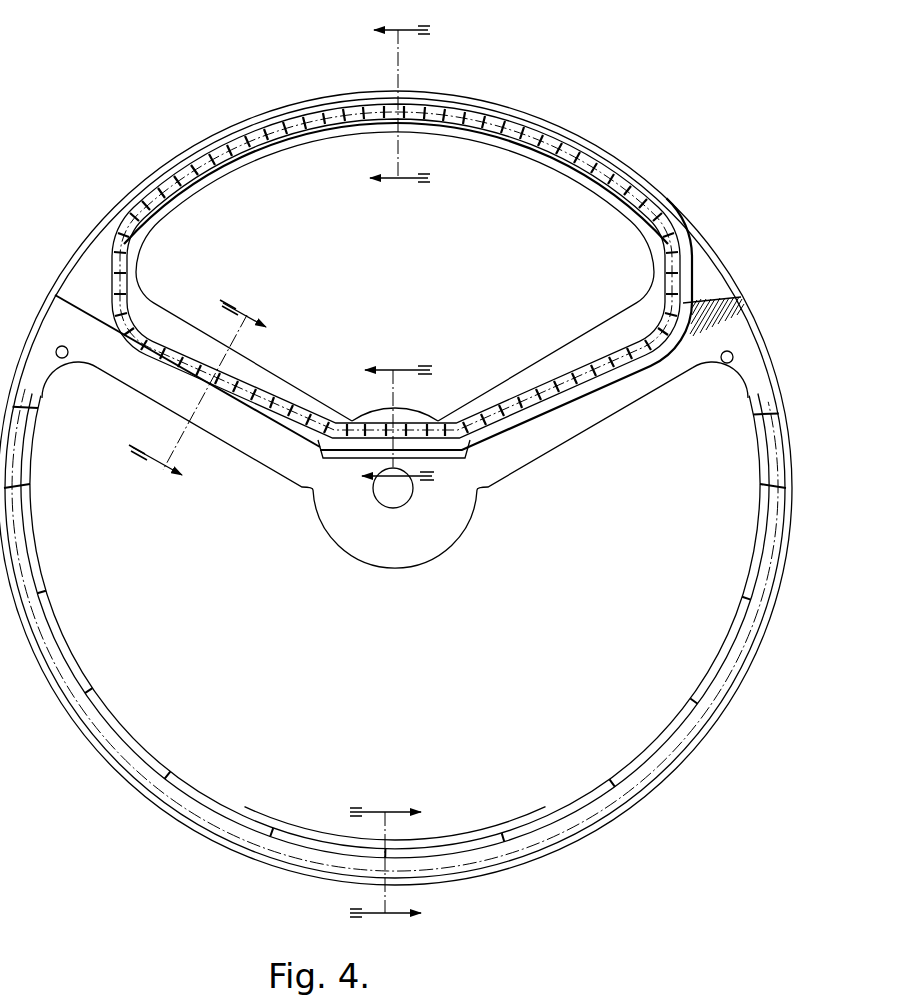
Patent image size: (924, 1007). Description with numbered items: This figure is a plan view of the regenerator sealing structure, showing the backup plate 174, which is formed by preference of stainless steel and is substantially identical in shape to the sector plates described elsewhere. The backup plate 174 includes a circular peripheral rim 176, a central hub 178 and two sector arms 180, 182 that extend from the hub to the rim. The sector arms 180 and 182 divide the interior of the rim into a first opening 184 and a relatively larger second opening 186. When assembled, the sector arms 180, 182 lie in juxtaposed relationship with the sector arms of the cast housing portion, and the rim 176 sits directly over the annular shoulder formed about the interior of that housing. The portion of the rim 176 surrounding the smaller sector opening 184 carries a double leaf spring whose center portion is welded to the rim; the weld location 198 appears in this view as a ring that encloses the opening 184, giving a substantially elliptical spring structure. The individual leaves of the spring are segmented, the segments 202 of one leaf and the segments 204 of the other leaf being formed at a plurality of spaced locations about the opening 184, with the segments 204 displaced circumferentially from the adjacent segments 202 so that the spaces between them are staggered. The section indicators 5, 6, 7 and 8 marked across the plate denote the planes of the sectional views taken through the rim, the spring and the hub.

The backup plate 174 is at (617, 414).
The peripheral rim 176 is at (704, 663).
The hub 178 is at (462, 538).
The sector arm 180 is at (252, 459).
The sector arm 182 is at (549, 451).
The first opening 184 is at (395, 276).
The second opening 186 is at (395, 745).
The weld location 198 is at (249, 132).
The spring leaf segments 202 is at (343, 410).
The spring leaf segments 204 is at (302, 413).
The section line 5- 5 is at (395, 115).
The section line 6- 6 is at (197, 389).
The section line 7- 7 is at (398, 424).
The section line 8- 8 is at (385, 861).